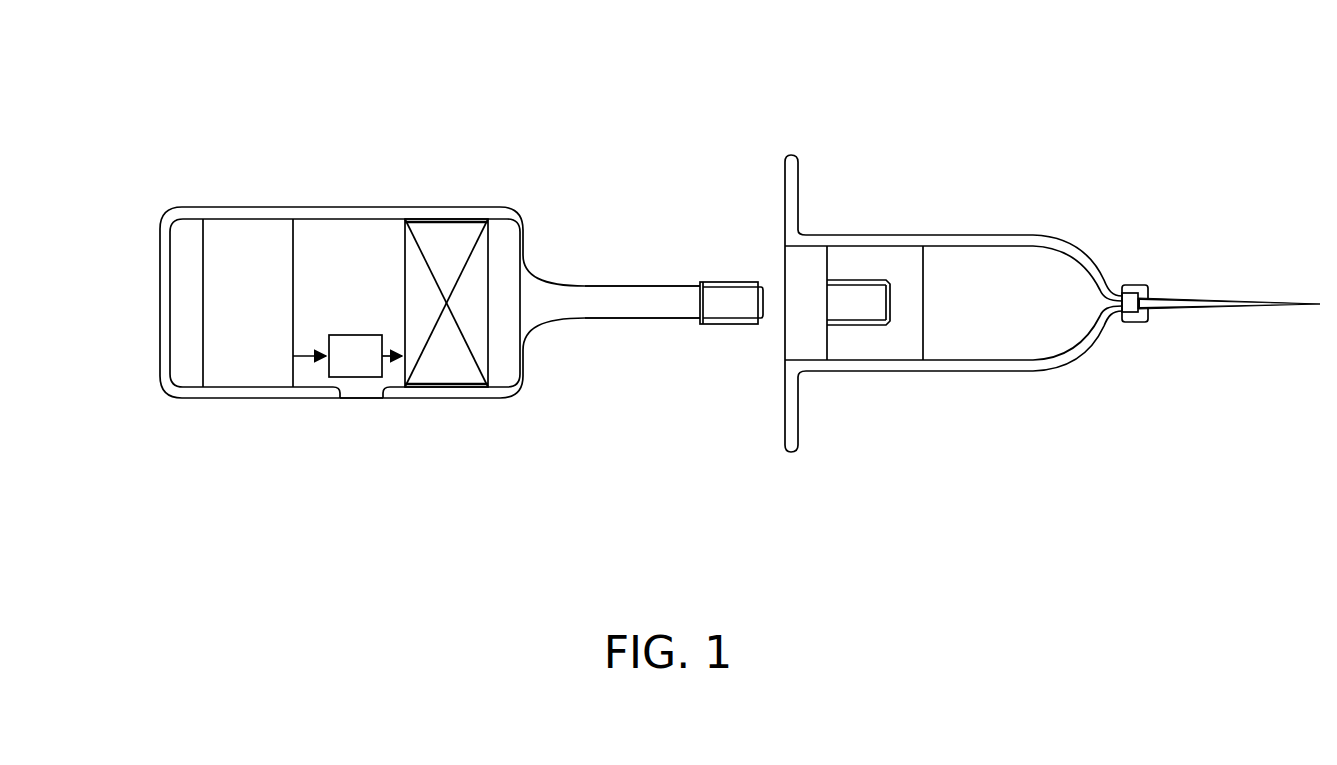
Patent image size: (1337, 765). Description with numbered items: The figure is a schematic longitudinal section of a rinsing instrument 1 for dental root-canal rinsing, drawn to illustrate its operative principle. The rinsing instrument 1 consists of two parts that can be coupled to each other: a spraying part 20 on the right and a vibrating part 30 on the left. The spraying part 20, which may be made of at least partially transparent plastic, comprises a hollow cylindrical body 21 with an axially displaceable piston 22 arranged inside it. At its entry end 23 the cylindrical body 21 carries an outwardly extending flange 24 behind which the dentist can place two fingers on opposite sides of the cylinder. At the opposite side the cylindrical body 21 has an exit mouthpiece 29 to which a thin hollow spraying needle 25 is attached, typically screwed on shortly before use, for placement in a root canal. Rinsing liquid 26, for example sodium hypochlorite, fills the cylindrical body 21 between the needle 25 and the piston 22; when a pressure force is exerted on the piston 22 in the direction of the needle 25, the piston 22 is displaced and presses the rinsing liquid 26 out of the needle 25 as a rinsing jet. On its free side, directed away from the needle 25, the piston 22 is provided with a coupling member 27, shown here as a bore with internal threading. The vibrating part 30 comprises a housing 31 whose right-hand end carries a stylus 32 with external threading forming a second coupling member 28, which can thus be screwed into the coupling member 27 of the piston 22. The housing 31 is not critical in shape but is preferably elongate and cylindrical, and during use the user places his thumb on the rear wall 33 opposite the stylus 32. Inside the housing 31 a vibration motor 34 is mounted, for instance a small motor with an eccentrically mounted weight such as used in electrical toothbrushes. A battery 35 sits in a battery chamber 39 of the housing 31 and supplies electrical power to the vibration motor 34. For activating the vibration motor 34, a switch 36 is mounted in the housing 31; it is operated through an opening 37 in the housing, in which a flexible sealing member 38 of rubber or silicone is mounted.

The rinsing instrument 1 is at (1190, 131).
The spraying part 20 is at (958, 534).
The hollow cylindrical body 21 is at (1000, 232).
The piston 22 is at (891, 261).
The entry end 23 is at (840, 100).
The flange 24 is at (797, 182).
The spraying needle 25 is at (1277, 297).
The rinsing liquid 26 is at (980, 335).
The coupling member 27 is at (859, 308).
The second coupling member 28 is at (716, 325).
The exit mouthpiece 29 is at (1118, 292).
The vibrating part 30 is at (342, 534).
The housing 31 is at (255, 206).
The stylus 32 is at (663, 285).
The rear wall 33 is at (160, 313).
The vibration motor 34 is at (441, 238).
The battery 35 is at (262, 361).
The switch 36 is at (347, 361).
The opening 37 is at (357, 388).
The flexible sealing member 38 is at (372, 400).
The battery chamber 39 is at (188, 361).